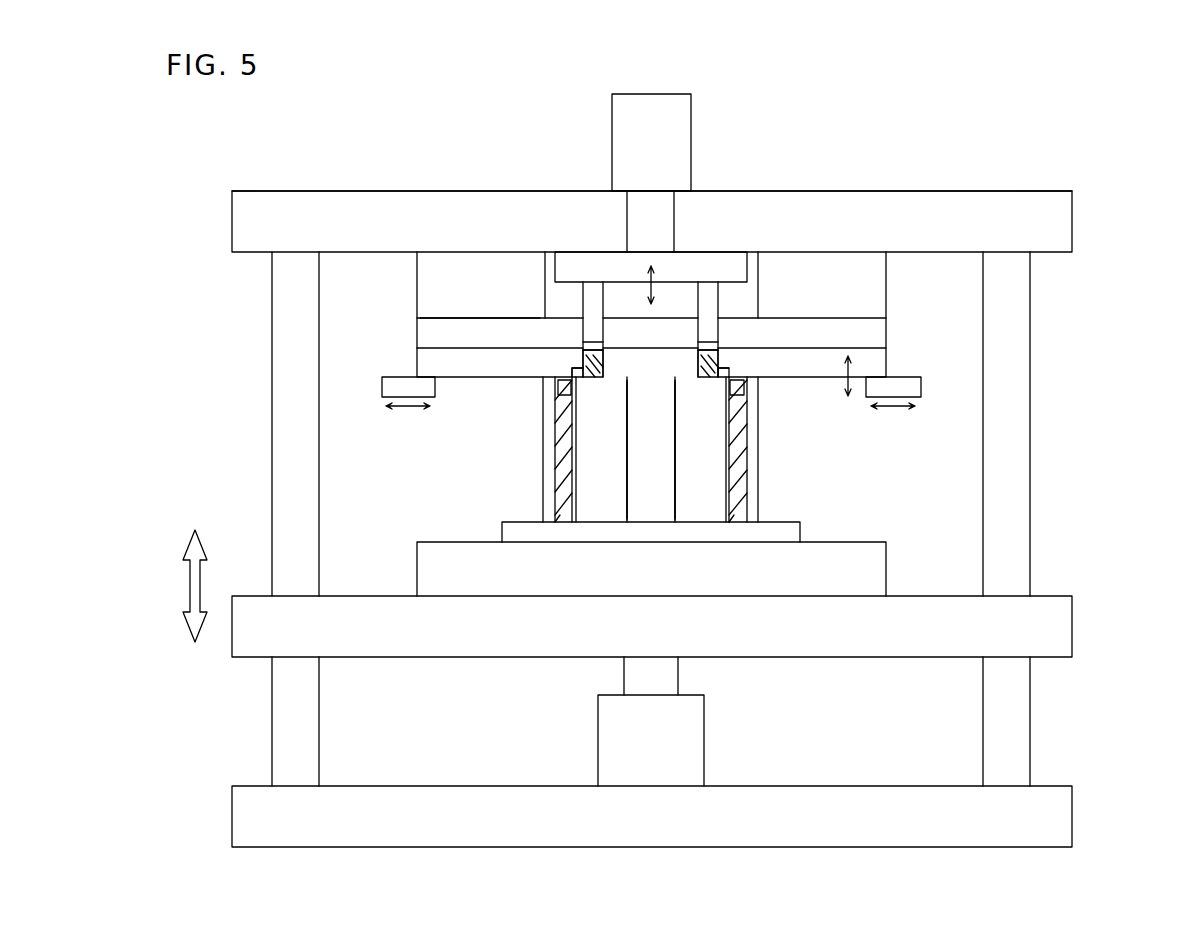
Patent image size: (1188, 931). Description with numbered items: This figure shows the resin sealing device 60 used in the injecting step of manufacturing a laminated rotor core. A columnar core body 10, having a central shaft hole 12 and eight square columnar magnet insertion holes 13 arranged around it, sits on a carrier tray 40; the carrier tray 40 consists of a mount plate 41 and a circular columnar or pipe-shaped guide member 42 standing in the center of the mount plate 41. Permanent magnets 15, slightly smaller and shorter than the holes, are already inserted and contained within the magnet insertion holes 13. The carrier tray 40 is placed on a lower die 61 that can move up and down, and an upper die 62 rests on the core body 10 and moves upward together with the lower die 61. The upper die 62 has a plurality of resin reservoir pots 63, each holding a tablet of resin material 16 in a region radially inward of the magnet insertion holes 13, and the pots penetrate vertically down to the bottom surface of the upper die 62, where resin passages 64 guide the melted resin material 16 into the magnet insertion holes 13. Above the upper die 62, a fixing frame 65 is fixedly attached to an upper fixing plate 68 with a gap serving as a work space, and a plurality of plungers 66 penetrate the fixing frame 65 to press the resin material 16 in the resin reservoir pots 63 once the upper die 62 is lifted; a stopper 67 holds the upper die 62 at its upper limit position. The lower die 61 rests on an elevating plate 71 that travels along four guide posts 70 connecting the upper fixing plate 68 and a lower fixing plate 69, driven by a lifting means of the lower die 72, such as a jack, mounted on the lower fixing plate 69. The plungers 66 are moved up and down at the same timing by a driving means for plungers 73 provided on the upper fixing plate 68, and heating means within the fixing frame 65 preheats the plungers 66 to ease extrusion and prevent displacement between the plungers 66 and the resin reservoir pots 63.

The core body 10 is at (760, 446).
The shaft hole 12 is at (636, 420).
The magnet insertion hole 13 is at (560, 366).
The permanent magnet 15 is at (566, 452).
The resin material 16 is at (653, 317).
The carrier tray 40 is at (826, 711).
The mount plate 41 is at (600, 533).
The guide member 42 is at (665, 487).
The resin sealing device 60 is at (1032, 133).
The lower die 61 is at (890, 568).
The upper die 62 is at (893, 360).
The resin reservoir pot 63 is at (582, 370).
The resin passage 64 is at (572, 372).
The fixing frame 65 is at (414, 323).
The plunger 66 is at (598, 320).
The stopper 67 is at (400, 376).
The upper fixing plate 68 is at (1072, 215).
The lower fixing plate 69 is at (1072, 818).
The guide post 70 is at (293, 355).
The elevating plate 71 is at (1072, 628).
The lifting means of lower die 72 is at (598, 740).
The driving means for plungers 73 is at (660, 145).